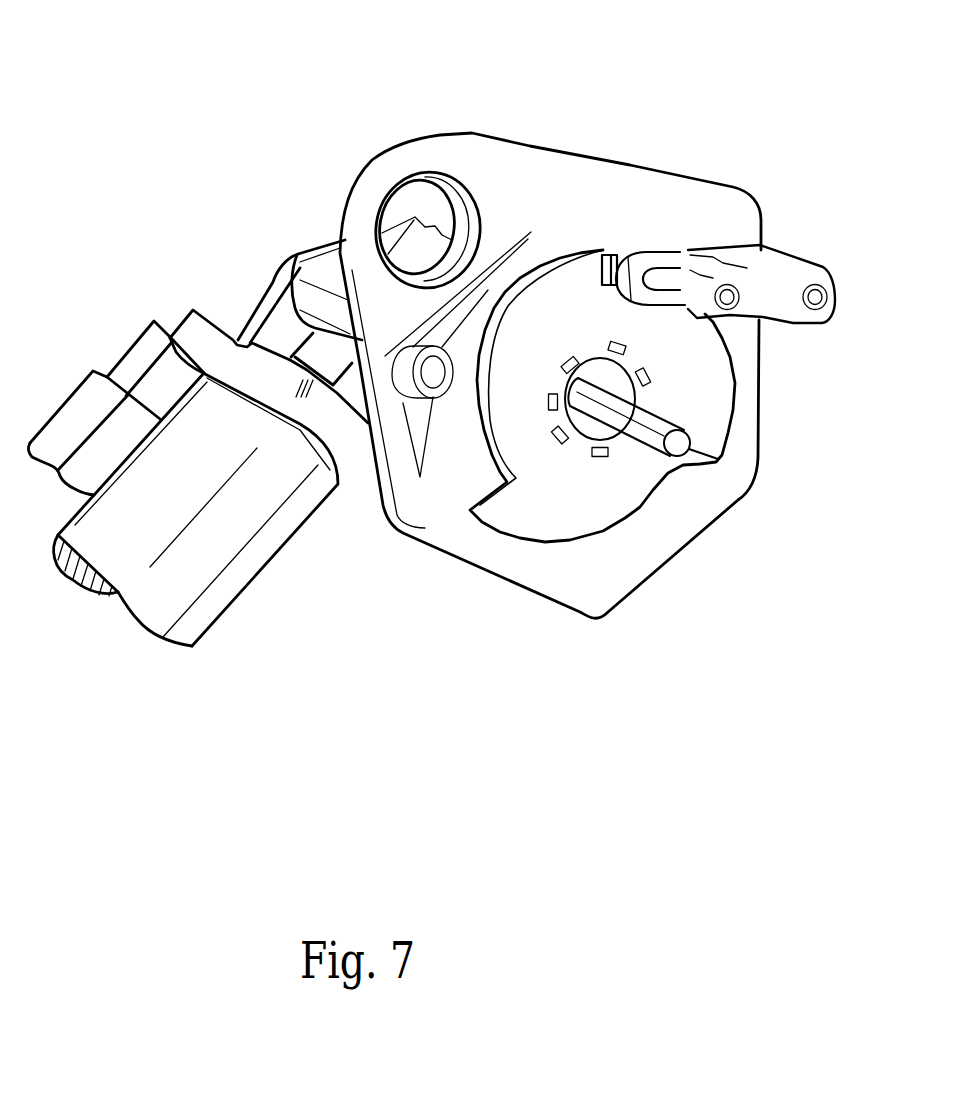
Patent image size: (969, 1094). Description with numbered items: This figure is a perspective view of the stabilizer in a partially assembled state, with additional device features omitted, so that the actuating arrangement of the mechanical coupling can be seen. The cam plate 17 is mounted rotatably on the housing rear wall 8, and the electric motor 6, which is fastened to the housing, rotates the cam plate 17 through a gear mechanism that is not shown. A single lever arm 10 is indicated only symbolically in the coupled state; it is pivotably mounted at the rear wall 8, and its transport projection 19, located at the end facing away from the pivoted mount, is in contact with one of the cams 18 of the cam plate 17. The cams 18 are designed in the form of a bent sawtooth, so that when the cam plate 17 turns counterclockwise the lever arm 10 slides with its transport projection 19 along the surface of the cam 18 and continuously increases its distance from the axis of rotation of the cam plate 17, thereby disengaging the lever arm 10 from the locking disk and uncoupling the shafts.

The electric motor 6 is at (182, 582).
The rear wall of the housing 8 is at (682, 195).
The lever arm 10 is at (780, 260).
The cam plate 17 is at (543, 450).
The cam 18 is at (713, 423).
The transport projection 19 is at (621, 252).